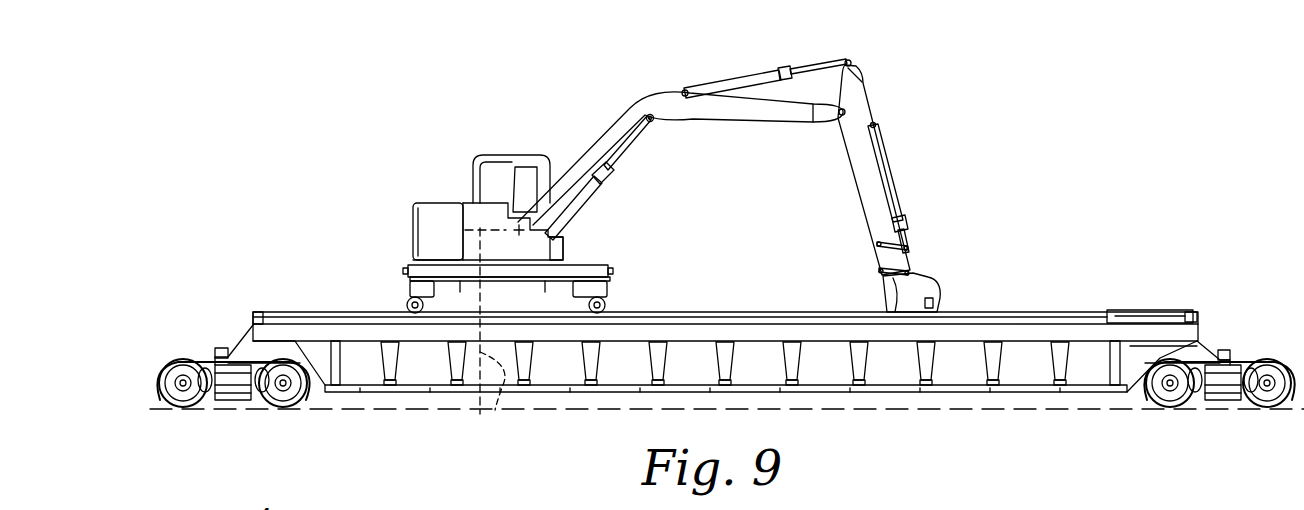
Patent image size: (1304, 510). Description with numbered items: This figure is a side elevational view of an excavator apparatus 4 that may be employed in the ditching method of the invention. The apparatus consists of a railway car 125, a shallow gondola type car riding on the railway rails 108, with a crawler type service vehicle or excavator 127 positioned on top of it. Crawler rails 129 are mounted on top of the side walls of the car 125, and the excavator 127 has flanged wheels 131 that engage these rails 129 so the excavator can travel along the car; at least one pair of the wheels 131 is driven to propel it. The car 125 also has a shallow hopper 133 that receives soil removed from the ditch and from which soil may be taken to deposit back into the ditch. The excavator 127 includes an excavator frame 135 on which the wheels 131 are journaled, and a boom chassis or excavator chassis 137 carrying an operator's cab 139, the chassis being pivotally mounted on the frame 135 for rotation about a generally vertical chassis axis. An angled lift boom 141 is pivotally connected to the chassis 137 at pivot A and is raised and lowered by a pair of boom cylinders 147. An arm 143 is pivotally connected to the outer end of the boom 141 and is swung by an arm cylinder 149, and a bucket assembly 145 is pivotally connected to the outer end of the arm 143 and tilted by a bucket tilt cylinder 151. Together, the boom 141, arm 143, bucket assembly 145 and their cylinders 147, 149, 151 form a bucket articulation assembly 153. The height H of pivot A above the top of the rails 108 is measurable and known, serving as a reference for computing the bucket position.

The excavator apparatus 4 is at (342, 107).
The rails 108 is at (148, 408).
The railway car 125 is at (280, 300).
The excavator 127 is at (400, 203).
The crawler rails 129 is at (1050, 310).
The flanged wheels 131 is at (403, 305).
The shallow hopper 133 is at (548, 372).
The excavator frame 135 is at (597, 258).
The excavator chassis 137 is at (433, 210).
The operator's cab 139 is at (500, 157).
The lift boom 141 is at (695, 117).
The arm 143 is at (847, 153).
The bucket assembly 145 is at (927, 283).
The boom cylinders 147 is at (580, 208).
The arm cylinder 149 is at (733, 83).
The bucket tilt cylinder 151 is at (883, 158).
The bucket articulation assembly 153 is at (917, 59).